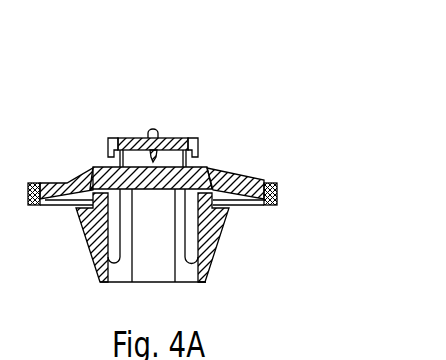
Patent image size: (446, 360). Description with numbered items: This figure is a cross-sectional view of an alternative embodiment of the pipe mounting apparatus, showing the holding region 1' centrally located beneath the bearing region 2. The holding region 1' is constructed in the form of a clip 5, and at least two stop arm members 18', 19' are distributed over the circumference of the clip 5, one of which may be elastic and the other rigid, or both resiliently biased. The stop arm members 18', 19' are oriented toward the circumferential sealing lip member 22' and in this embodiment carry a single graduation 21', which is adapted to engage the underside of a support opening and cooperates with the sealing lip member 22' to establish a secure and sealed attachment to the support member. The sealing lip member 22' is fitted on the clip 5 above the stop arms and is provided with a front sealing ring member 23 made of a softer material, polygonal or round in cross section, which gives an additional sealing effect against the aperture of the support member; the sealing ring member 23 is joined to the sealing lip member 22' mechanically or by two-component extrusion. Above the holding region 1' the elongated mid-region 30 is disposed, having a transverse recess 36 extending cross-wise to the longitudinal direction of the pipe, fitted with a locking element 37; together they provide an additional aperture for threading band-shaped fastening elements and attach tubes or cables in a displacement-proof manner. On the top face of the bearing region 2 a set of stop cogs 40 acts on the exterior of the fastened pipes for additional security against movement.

The holding region 1' is at (118, 259).
The bearing region 2 is at (201, 127).
The clip 5 is at (209, 276).
The stop arm member 18' is at (75, 237).
The stop arm member 19' is at (233, 237).
The graduation 21' is at (59, 204).
The circumferential sealing lip member 22' is at (281, 169).
The front sealing ring member 23 is at (278, 203).
The mid-region 30 is at (120, 130).
The transverse recess 36 is at (128, 157).
The locking element 37 is at (163, 138).
The stop cogs 40 is at (153, 129).